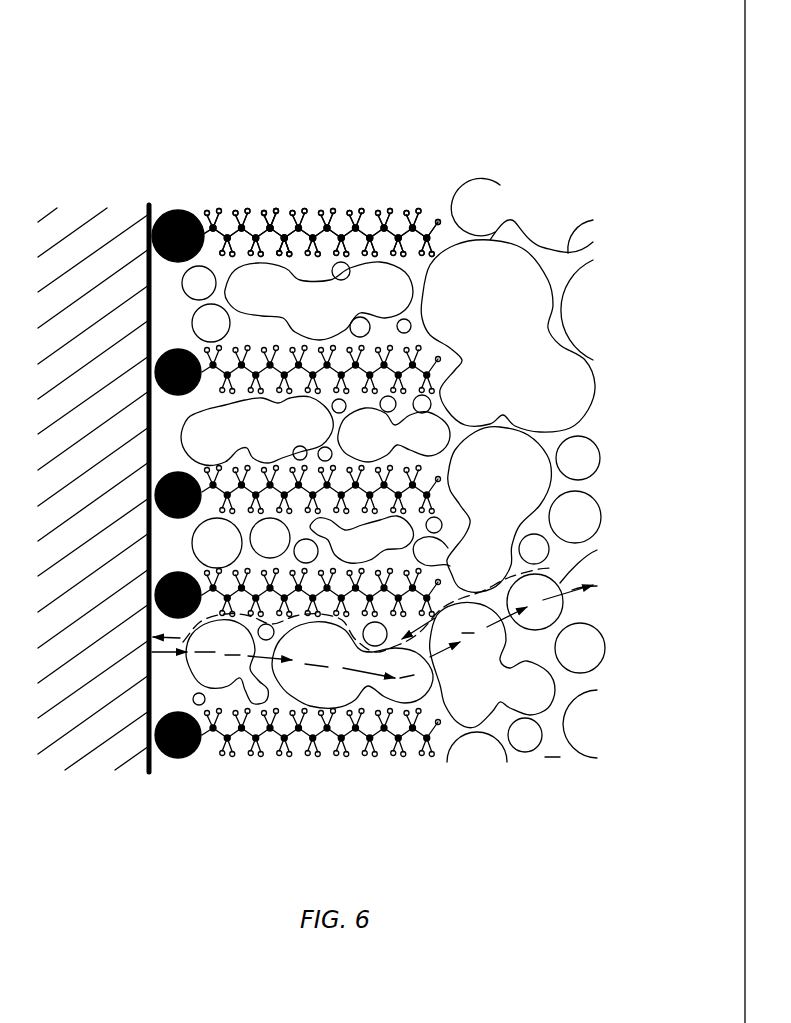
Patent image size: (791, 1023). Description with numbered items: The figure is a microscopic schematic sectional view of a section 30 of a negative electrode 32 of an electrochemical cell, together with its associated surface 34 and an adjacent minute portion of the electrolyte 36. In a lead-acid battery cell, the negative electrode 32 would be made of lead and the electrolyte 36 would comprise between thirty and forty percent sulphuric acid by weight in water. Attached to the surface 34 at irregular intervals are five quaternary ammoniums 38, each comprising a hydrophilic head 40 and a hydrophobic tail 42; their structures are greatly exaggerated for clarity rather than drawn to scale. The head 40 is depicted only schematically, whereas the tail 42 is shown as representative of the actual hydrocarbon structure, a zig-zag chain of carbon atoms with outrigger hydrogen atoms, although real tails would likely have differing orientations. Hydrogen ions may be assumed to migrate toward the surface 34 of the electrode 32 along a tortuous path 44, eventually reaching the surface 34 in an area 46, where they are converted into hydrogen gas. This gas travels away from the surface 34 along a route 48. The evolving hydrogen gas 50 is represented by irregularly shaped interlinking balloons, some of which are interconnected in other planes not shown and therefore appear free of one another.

The section 30 is at (258, 165).
The negative electrode 32 is at (84, 243).
The surface 34 is at (152, 298).
The electrolyte 36 is at (372, 202).
The quaternary ammonium 38 is at (203, 395).
The hydrophilic head 40 is at (173, 520).
The hydrophobic tail 42 is at (275, 204).
The tortuous path 44 is at (556, 572).
The area 46 is at (160, 640).
The route 48 is at (468, 635).
The evolving hydrogen gas 50 is at (487, 256).